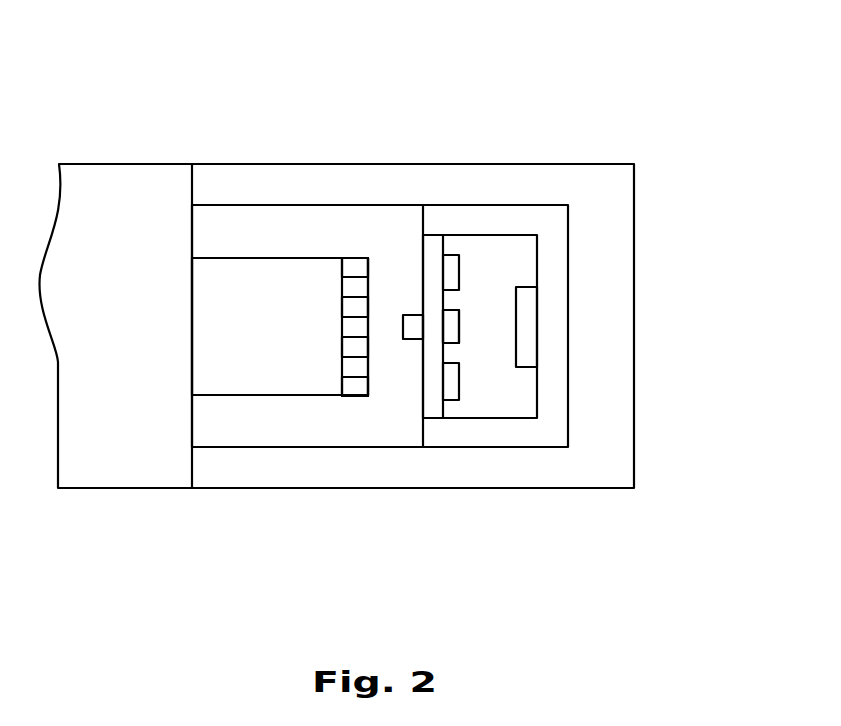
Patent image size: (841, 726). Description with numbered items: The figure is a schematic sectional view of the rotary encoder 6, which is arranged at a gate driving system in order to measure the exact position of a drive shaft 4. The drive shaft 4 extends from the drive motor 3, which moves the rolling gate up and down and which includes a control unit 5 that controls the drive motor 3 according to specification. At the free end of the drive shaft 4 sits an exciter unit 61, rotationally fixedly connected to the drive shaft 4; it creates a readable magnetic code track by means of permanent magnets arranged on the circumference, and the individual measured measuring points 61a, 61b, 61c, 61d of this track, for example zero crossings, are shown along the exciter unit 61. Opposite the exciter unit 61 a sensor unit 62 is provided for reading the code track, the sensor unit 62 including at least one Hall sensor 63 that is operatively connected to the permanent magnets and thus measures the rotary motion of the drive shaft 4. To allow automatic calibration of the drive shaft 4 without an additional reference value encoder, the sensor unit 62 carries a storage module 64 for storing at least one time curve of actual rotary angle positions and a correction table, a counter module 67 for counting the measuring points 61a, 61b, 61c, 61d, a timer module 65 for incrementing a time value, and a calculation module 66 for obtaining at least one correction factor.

The drive motor 3 is at (116, 212).
The drive shaft 4 is at (257, 298).
The control unit 5 is at (540, 323).
The rotary encoder 6 is at (387, 400).
The exciter unit 61 is at (354, 225).
The measuring point 61a is at (352, 267).
The measuring point 61b is at (353, 305).
The measuring point 61c is at (355, 348).
The measuring point 61d is at (353, 387).
The sensor unit 62 is at (432, 252).
The Hall sensor 63 is at (412, 318).
The storage module 64 is at (452, 268).
The timer module 65 is at (452, 388).
The calculation module 66 is at (452, 323).
The counter module 67 is at (453, 338).